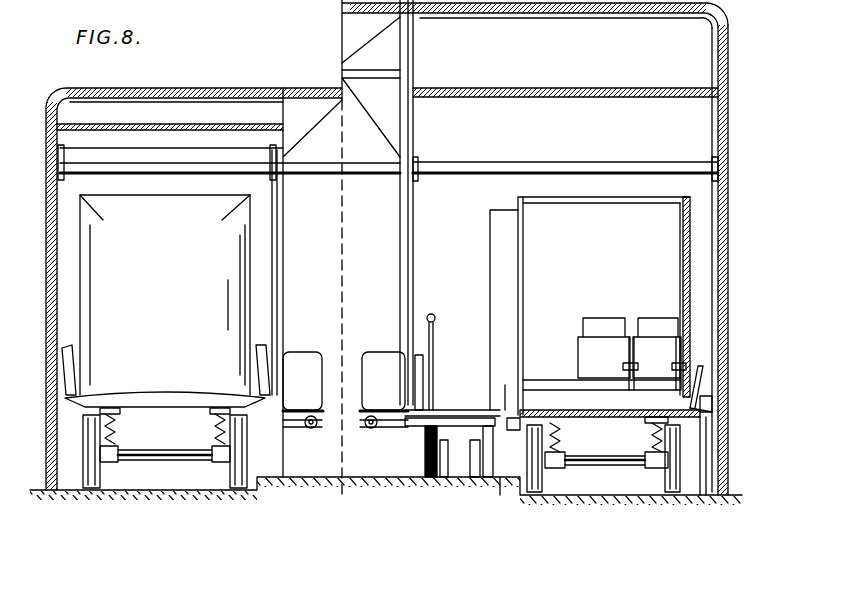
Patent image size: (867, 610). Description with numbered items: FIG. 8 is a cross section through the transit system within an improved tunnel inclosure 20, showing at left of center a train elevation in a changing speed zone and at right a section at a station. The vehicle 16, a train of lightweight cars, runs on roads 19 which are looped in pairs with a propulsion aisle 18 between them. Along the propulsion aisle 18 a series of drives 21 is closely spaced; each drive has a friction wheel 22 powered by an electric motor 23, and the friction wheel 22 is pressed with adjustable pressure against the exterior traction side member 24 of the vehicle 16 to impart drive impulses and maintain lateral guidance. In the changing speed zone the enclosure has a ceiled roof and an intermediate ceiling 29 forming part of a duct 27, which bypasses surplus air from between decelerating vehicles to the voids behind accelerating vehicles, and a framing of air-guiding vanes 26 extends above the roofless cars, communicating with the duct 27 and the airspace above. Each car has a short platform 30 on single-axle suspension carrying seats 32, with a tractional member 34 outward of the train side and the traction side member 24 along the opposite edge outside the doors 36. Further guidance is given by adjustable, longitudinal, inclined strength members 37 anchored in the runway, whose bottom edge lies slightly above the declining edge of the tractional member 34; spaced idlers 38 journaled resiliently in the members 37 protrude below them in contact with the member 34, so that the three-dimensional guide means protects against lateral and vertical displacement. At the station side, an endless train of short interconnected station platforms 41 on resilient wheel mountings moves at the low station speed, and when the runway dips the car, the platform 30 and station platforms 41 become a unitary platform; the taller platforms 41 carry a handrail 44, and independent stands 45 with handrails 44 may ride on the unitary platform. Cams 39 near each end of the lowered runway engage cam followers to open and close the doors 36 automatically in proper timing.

The vehicle 16 is at (182, 272).
The propulsion aisle 18 is at (290, 212).
The road 19 is at (140, 482).
The tunnel inclosure 20 is at (728, 32).
The drive 21 is at (362, 355).
The friction wheel 22 is at (418, 352).
The electric motor 23 is at (384, 390).
The traction side member 24 is at (507, 396).
The air-guiding vane 26 is at (125, 164).
The duct 27 is at (387, 246).
The intermediate ceiling 29 is at (527, 90).
The platform 30 is at (148, 418).
The seat 32 is at (612, 327).
The tractional member 34 is at (697, 417).
The door 36 is at (490, 235).
The inclined strength member 37 is at (712, 380).
The idler 38 is at (698, 365).
The cam 39 is at (515, 478).
The station platform 41 is at (462, 420).
The handrail 44 is at (436, 318).
The stand 45 is at (444, 412).